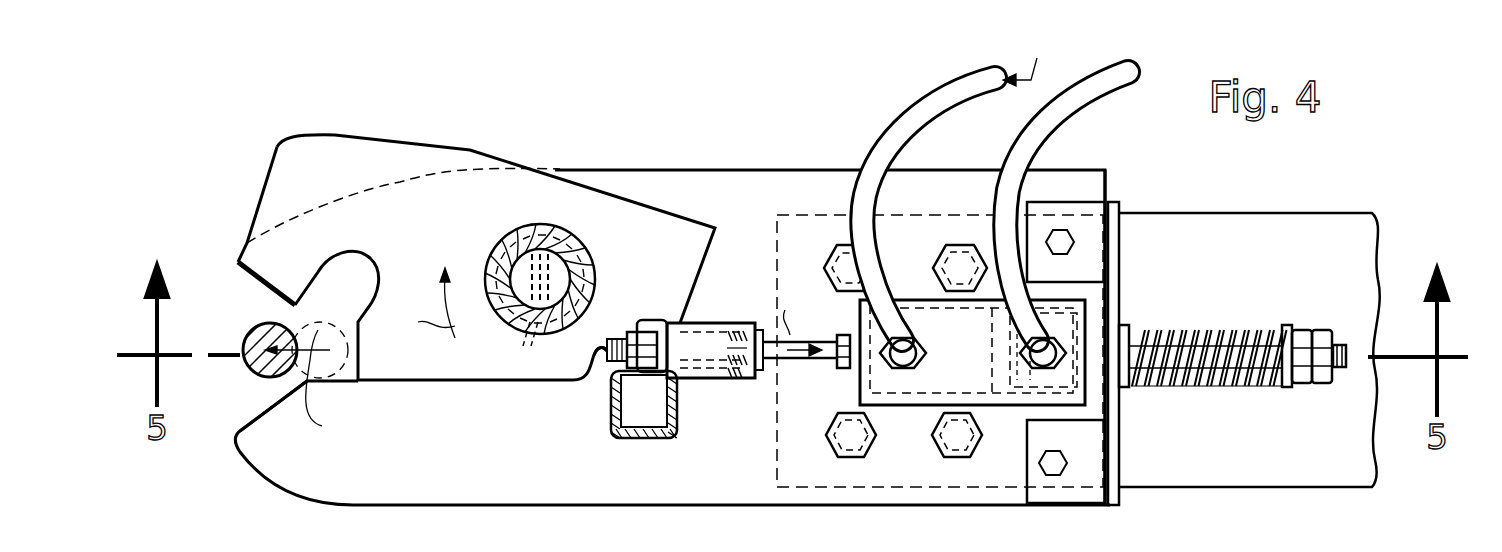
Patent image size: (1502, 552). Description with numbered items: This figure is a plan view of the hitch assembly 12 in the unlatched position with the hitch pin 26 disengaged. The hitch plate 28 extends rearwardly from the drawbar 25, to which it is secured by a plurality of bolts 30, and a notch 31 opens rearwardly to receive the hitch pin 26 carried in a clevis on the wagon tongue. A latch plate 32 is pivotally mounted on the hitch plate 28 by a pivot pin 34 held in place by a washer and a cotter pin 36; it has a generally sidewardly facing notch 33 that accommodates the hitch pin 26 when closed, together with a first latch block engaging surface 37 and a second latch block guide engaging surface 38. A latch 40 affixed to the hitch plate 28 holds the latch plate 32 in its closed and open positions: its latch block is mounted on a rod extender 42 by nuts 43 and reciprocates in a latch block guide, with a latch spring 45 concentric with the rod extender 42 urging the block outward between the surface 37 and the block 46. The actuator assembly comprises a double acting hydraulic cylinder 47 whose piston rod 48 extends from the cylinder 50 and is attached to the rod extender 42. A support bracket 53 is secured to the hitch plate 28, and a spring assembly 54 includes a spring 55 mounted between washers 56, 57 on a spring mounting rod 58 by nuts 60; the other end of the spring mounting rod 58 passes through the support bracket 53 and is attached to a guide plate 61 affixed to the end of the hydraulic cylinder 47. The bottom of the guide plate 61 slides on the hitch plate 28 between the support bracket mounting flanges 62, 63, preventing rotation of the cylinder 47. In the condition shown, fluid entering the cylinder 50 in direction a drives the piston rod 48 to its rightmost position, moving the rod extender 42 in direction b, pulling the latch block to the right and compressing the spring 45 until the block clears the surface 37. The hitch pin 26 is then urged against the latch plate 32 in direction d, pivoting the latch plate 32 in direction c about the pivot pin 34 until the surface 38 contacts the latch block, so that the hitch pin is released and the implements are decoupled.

The hitch assembly 12 is at (270, 106).
The drawbar 25 is at (1265, 228).
The hitch pin 26 is at (248, 330).
The hitch plate 28 is at (727, 185).
The bolts 30 is at (958, 257).
The notch 31 is at (277, 407).
The latch plate 32 is at (598, 215).
The notch 33 is at (318, 280).
The pivot pin 34 is at (532, 250).
The cotter pin 36 is at (533, 275).
The first latch block engaging surface 37 is at (598, 373).
The second latch block guide engaging surface 38 is at (650, 320).
The latch 40 is at (729, 310).
The rod extender 42 is at (792, 358).
The nuts 43 is at (629, 313).
The latch spring 45 is at (736, 375).
The block 46 is at (638, 404).
The double acting hydraulic cylinder 47 is at (920, 276).
The piston rod 48 is at (937, 375).
The cylinder 50 is at (997, 407).
The support bracket 53 is at (1113, 247).
The spring assembly 54 is at (1219, 398).
The spring 55 is at (1205, 385).
The washer 56 is at (1285, 325).
The washer 57 is at (1124, 330).
The spring mounting rod 58 is at (1195, 345).
The nuts 60 is at (1315, 330).
The guide plate 61 is at (1096, 268).
The support bracket mounting flange 62 is at (1058, 210).
The support bracket mounting flange 63 is at (1085, 473).